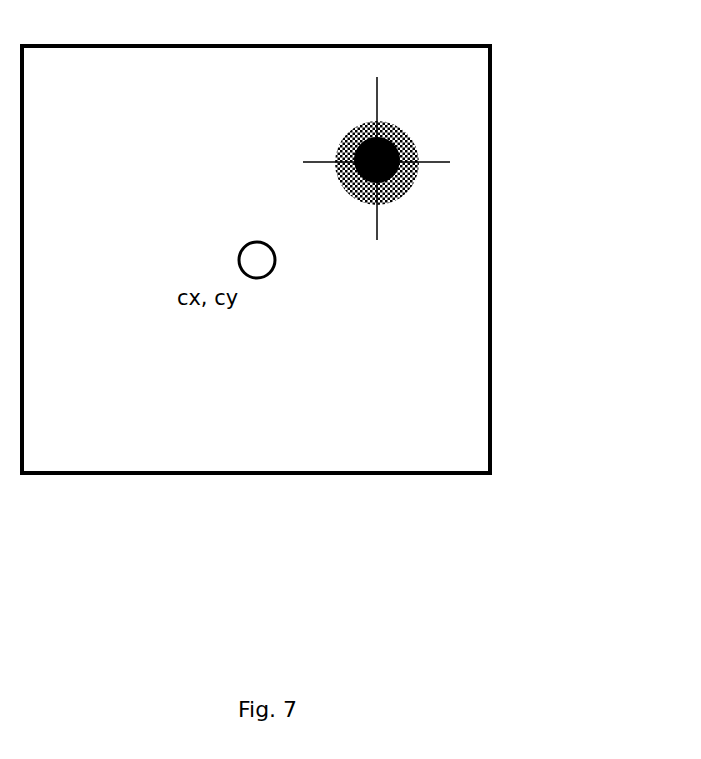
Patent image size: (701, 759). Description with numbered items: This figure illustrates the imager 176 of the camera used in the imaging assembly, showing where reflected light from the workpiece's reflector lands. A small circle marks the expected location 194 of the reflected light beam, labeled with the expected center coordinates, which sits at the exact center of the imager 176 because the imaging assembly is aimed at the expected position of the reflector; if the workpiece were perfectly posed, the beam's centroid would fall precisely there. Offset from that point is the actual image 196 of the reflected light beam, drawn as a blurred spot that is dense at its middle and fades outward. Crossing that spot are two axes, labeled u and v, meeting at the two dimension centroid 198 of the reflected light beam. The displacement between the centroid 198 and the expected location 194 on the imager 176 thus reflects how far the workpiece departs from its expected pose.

The imager 176 is at (492, 233).
The expected location 194 is at (252, 240).
The actual image 196 is at (410, 130).
The two dimension centroid 198 is at (410, 170).